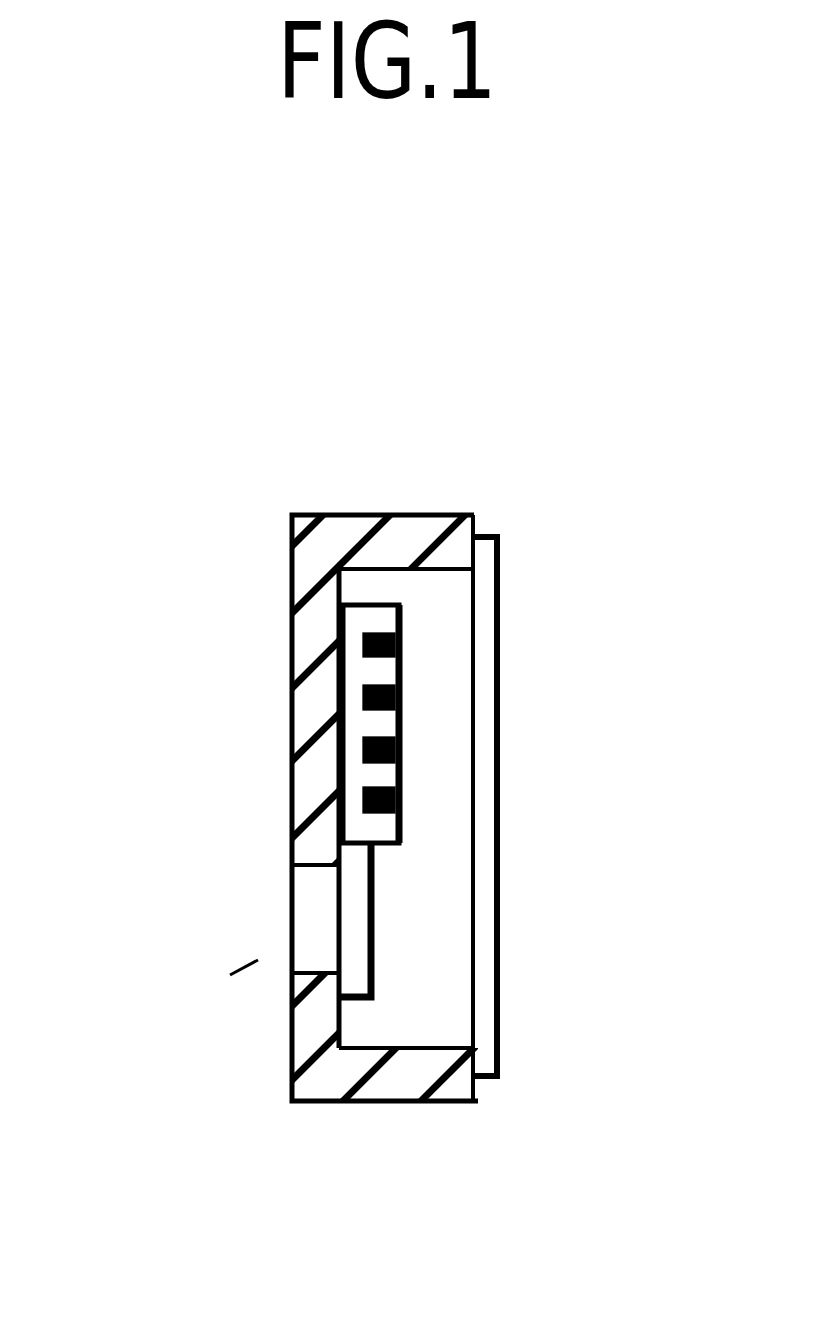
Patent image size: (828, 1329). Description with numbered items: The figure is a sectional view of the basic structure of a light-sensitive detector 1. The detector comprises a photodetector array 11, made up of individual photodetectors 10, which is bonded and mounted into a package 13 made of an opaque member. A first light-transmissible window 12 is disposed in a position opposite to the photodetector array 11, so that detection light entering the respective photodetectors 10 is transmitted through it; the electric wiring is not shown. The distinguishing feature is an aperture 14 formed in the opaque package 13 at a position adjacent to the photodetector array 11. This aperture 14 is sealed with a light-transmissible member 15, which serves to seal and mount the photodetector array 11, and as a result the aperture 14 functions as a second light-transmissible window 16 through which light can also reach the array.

The light-sensitive detector 1 is at (543, 483).
The photodetectors 10 is at (403, 752).
The photodetector array 11 is at (352, 666).
The first light-transmissible window 12 is at (485, 930).
The package 13 is at (313, 640).
The aperture 14 is at (308, 920).
The light-transmissible member 15 is at (375, 955).
The second light-transmissible window 16 is at (258, 960).